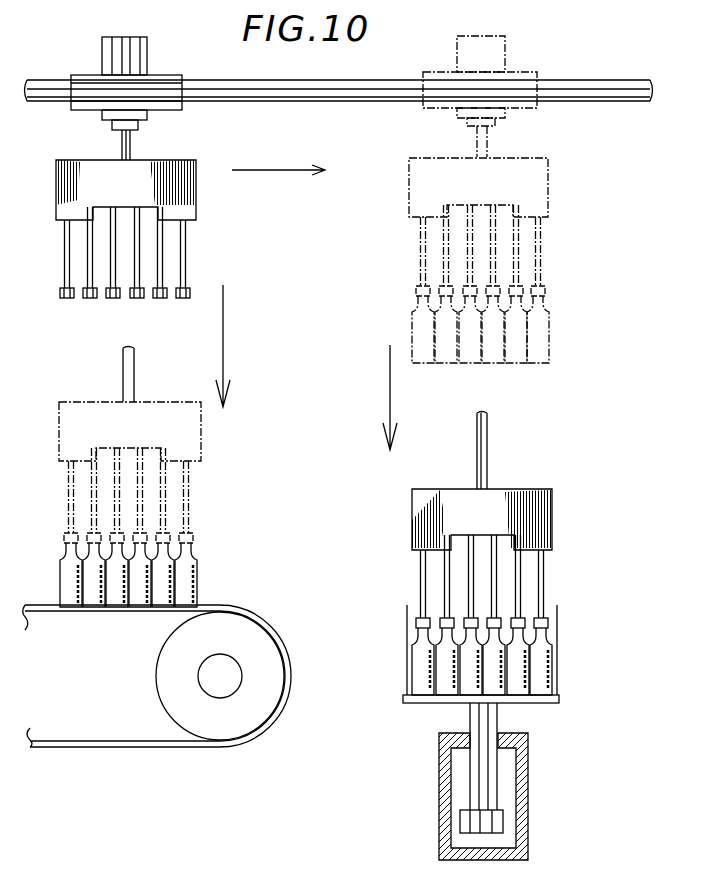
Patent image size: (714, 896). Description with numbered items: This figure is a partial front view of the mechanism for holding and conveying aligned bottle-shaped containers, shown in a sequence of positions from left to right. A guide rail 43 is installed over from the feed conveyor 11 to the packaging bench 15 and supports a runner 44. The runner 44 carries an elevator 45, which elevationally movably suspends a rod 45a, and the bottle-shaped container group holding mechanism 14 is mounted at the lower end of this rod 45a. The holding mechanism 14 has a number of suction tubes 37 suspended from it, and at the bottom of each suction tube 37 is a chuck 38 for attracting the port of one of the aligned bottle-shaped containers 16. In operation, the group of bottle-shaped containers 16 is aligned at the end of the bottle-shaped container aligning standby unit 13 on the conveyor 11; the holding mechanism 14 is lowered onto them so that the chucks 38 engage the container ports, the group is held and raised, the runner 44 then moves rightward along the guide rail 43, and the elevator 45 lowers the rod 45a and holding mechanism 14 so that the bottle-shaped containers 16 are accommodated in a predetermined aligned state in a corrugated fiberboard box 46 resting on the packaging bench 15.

The feed conveyor 11 is at (283, 608).
The bottle-shaped container aligning standby unit 13 is at (120, 628).
The bottle-shaped container group holding mechanism 14 is at (196, 172).
The packaging bench 15 is at (538, 782).
The bottle-shaped container 16 is at (452, 353).
The suction tube 37 is at (186, 240).
The chuck 38 is at (113, 299).
The guide rail 43 is at (366, 92).
The runner 44 is at (176, 80).
The elevator 45 is at (147, 50).
The rod 45a is at (131, 138).
The corrugated fiberboard box 46 is at (562, 660).